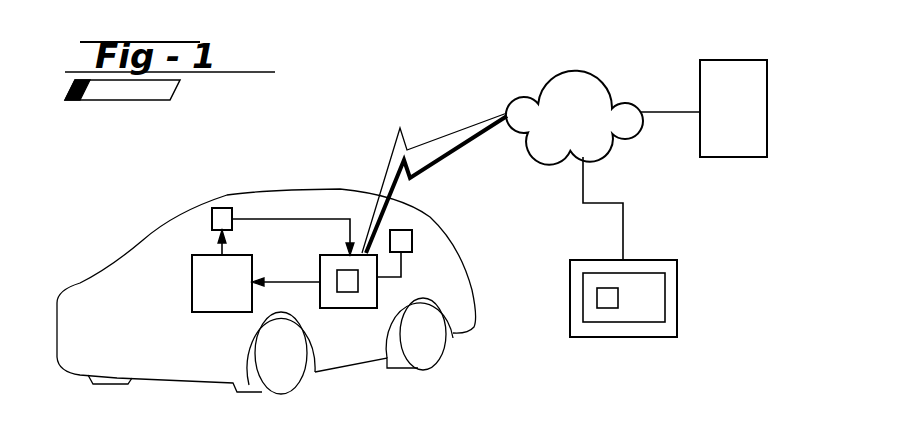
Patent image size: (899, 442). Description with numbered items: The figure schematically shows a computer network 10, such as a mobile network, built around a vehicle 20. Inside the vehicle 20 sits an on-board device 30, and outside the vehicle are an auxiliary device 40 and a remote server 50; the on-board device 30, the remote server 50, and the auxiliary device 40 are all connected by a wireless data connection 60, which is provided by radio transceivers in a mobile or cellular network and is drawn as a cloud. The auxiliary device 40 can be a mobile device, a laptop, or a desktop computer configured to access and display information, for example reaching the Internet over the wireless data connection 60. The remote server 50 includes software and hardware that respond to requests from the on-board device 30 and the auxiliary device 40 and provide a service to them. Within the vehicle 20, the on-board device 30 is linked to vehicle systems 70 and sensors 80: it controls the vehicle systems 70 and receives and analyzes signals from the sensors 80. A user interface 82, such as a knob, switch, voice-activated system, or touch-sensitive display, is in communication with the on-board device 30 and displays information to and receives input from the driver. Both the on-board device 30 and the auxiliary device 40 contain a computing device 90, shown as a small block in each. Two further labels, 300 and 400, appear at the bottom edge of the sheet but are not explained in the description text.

The computer network 10 is at (438, 45).
The vehicle 20 is at (80, 240).
The on-board device 30 is at (333, 308).
The auxiliary device 40 is at (678, 282).
The remote server 50 is at (735, 157).
The wireless data connection 60 is at (592, 128).
The vehicle systems 70 is at (192, 288).
The sensors 80 is at (222, 208).
The user interface 82 is at (412, 240).
The computing device 90 is at (353, 292).
The method step 300 is at (546, 432).
The method step 400 is at (725, 432).